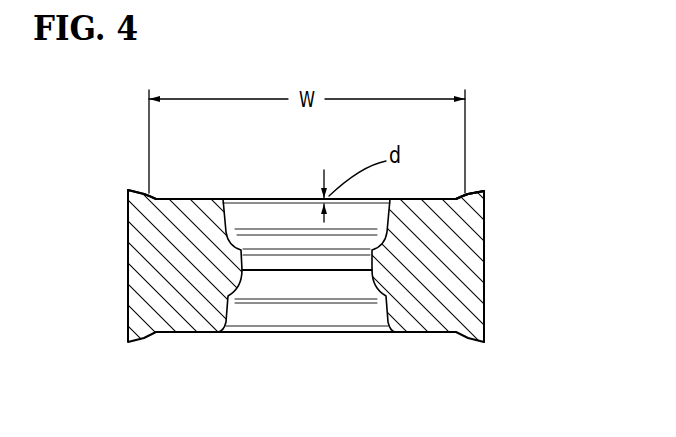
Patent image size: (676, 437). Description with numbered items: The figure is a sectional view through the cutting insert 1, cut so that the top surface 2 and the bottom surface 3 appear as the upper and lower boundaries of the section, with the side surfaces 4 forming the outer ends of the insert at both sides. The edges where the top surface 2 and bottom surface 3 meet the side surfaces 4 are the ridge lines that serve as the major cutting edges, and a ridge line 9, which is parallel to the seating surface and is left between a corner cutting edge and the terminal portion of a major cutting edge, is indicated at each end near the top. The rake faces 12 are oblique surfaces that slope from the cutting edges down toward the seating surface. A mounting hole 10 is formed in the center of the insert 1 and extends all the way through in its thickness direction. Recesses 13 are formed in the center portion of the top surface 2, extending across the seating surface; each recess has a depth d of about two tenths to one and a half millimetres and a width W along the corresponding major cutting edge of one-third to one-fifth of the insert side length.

The cutting insert 1 is at (494, 245).
The top surface 2 is at (468, 192).
The bottom surface 3 is at (163, 338).
The side surface 4 is at (486, 313).
The ridge line 9 is at (151, 193).
The mounting hole 10 is at (373, 274).
The rake face 12 is at (133, 190).
The recess 13 is at (283, 198).